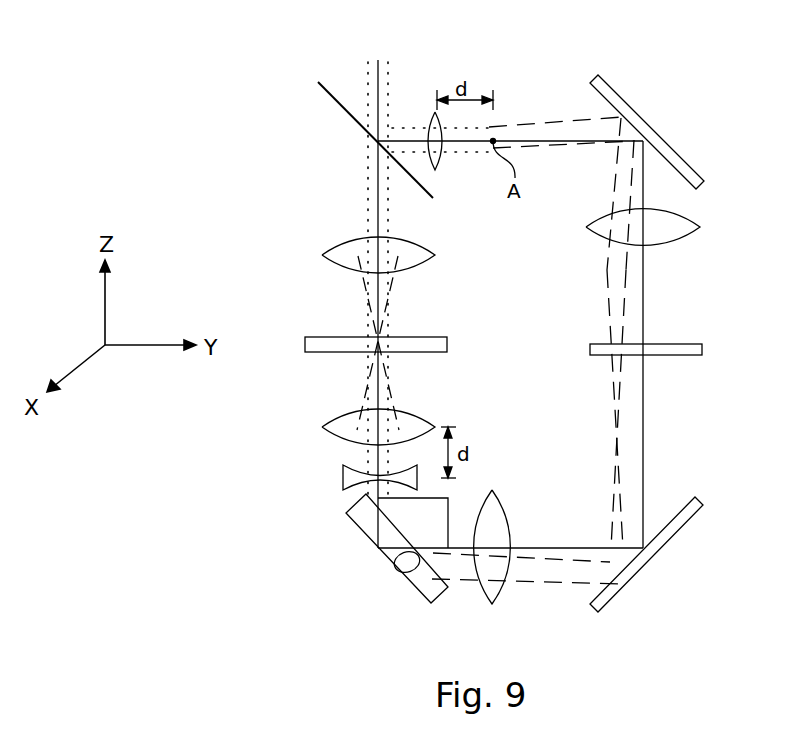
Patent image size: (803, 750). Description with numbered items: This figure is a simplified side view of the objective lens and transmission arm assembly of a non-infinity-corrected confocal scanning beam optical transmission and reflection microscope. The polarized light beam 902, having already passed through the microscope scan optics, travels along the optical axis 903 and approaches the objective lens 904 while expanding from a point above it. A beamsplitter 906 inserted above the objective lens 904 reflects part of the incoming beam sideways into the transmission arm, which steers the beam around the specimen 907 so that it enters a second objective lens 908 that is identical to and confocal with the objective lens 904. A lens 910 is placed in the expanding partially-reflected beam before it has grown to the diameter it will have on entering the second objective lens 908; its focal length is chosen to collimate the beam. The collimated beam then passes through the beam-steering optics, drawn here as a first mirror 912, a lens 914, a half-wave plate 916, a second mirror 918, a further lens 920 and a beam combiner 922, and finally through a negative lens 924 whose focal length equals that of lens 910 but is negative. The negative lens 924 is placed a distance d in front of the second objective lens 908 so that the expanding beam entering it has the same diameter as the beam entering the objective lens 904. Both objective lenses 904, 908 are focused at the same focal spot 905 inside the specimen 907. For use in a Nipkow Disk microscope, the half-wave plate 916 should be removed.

The polarized light beam 902 is at (387, 104).
The optical axis 903 is at (378, 197).
The objective lens 904 is at (322, 255).
The focal spot 905 is at (370, 345).
The beamsplitter 906 is at (337, 100).
The specimen 907 is at (305, 337).
The second objective lens 908 is at (322, 427).
The lens 910 is at (435, 170).
The mirror 912 is at (672, 142).
The lens 914 is at (700, 227).
The half-wave plate 916 is at (702, 348).
The mirror 918 is at (665, 548).
The lens 920 is at (492, 604).
The beam combiner 922 is at (363, 538).
The negative lens 924 is at (343, 478).